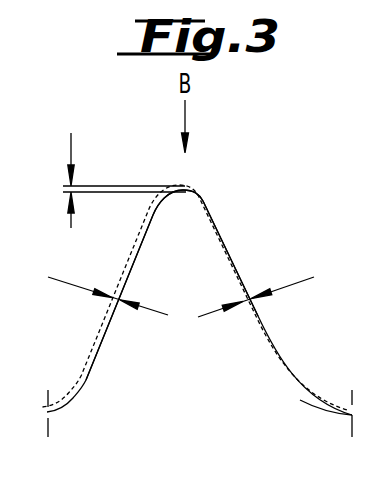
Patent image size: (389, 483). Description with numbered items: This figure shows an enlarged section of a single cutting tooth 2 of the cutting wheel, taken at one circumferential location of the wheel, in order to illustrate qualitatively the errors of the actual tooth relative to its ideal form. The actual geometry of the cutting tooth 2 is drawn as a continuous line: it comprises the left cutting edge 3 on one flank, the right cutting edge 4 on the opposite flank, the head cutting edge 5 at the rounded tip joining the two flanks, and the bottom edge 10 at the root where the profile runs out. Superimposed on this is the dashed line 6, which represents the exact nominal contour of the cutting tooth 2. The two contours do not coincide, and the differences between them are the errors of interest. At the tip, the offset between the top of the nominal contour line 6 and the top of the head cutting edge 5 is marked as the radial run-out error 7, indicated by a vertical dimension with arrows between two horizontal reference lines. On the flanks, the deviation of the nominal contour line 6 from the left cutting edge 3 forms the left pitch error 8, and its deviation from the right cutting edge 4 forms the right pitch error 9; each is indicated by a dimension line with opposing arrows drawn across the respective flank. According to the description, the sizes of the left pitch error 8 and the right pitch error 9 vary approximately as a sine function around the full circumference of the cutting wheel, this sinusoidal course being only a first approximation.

The cutting tooth 2 is at (169, 282).
The left cutting edge 3 is at (112, 323).
The right cutting edge 4 is at (232, 252).
The head cutting edge 5 is at (185, 189).
The nominal contour line 6 is at (136, 238).
The radial run-out error 7 is at (70, 145).
The left pitch error 8 is at (62, 281).
The right pitch error 9 is at (298, 279).
The bottom edge 10 is at (341, 410).